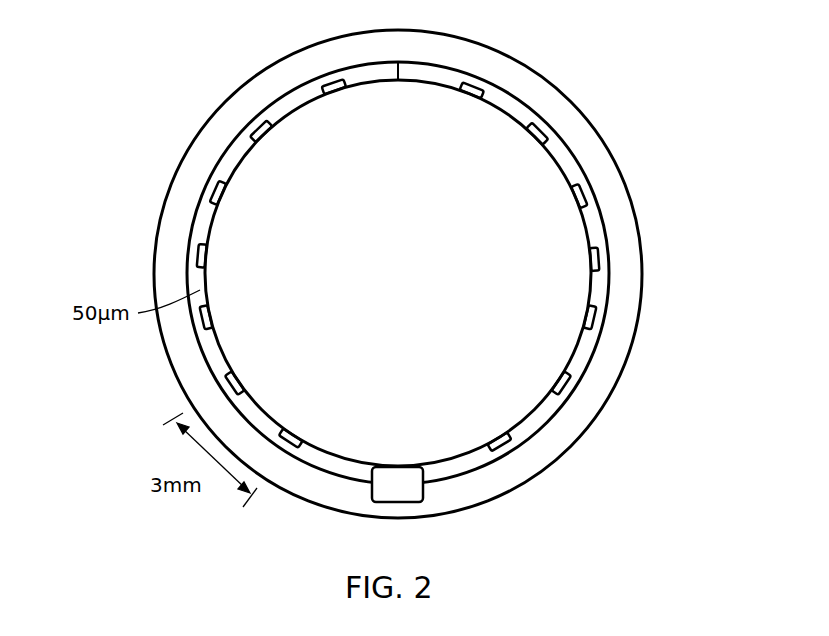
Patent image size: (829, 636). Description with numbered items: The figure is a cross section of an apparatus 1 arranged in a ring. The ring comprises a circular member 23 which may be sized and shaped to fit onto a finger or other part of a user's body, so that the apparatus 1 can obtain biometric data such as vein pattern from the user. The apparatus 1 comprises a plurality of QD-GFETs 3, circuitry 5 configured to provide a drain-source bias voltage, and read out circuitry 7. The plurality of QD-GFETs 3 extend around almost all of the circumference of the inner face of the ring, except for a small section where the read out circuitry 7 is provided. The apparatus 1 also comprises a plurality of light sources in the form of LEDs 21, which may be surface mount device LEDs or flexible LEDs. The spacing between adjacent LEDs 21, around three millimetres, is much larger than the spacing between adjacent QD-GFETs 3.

The apparatus 1 is at (533, 46).
The QD-GFETs 3 is at (295, 105).
The circuitry 5 is at (252, 92).
The read out circuitry 7 is at (425, 490).
The LEDs 21 is at (485, 95).
The circular member 23 is at (627, 190).